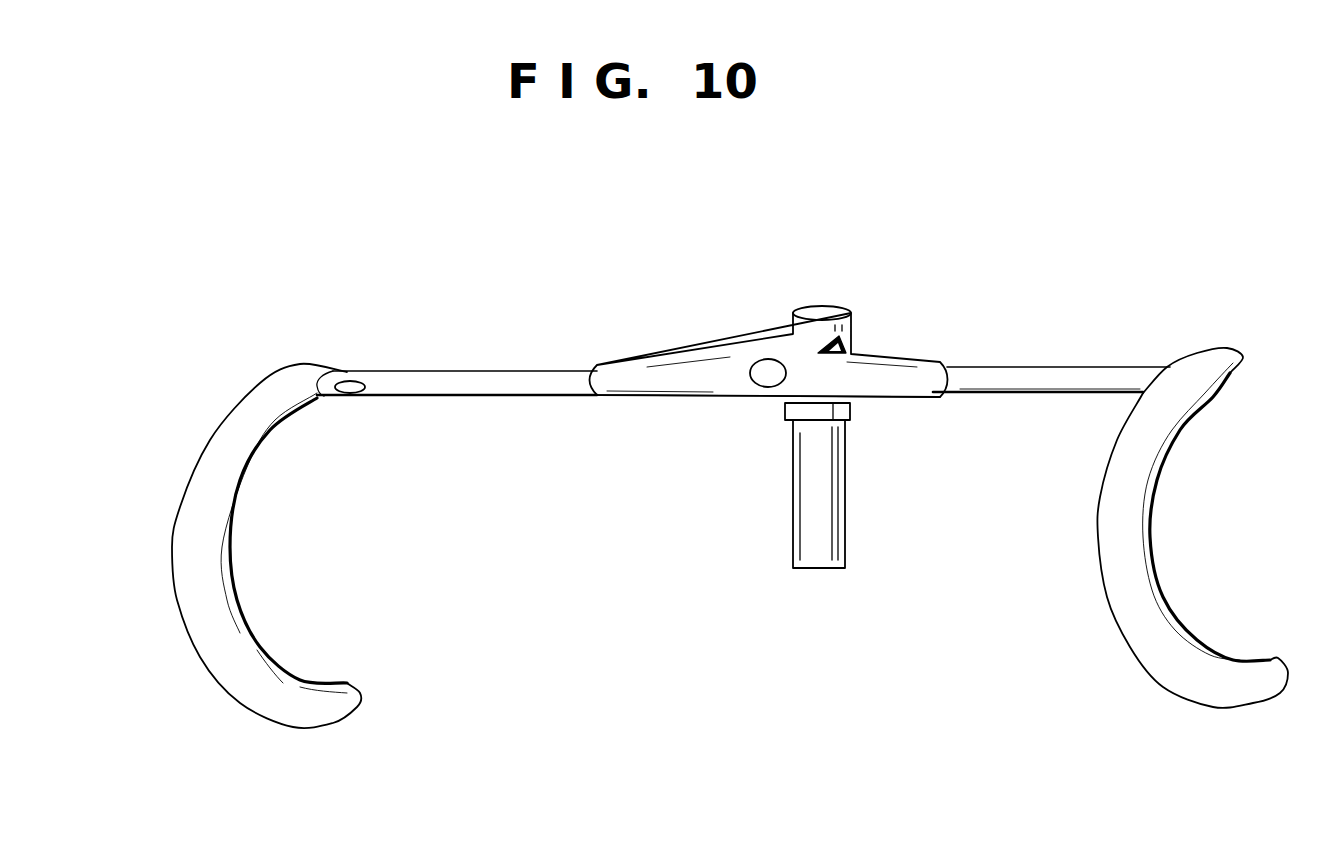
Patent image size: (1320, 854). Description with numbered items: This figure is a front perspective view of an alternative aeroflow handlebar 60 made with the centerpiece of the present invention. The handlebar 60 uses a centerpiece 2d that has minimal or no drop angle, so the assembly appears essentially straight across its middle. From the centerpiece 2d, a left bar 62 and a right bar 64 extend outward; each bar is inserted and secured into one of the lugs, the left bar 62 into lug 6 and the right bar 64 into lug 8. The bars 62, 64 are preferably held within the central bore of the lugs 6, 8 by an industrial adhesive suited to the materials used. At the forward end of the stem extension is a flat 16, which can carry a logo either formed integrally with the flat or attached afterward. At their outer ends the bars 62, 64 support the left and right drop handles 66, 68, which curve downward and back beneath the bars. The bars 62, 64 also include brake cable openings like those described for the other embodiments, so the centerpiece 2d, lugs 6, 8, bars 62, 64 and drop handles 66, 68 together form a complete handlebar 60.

The aeroflow handlebar 60 is at (1072, 245).
The left bar 62 is at (1023, 367).
The right bar 64 is at (443, 380).
The left drop handle 66 is at (1143, 647).
The right drop handle 68 is at (230, 677).
The lug 8 is at (638, 360).
The centerpiece 2d is at (707, 392).
The flat 16 is at (760, 358).
The lug 6 is at (898, 385).